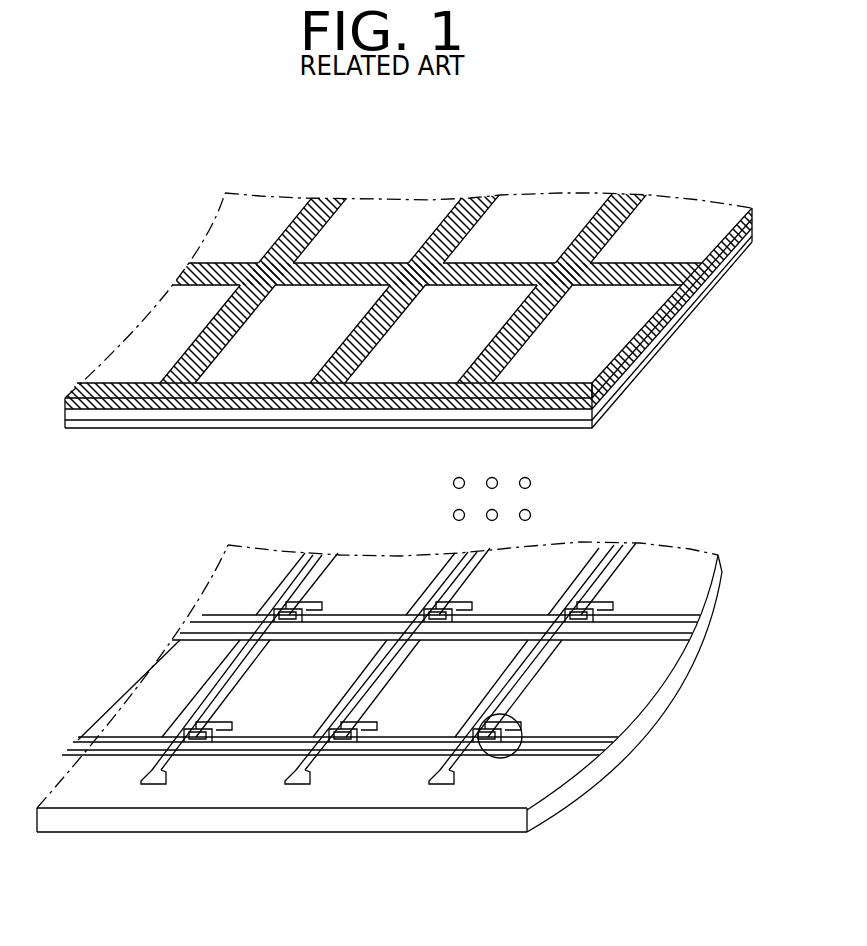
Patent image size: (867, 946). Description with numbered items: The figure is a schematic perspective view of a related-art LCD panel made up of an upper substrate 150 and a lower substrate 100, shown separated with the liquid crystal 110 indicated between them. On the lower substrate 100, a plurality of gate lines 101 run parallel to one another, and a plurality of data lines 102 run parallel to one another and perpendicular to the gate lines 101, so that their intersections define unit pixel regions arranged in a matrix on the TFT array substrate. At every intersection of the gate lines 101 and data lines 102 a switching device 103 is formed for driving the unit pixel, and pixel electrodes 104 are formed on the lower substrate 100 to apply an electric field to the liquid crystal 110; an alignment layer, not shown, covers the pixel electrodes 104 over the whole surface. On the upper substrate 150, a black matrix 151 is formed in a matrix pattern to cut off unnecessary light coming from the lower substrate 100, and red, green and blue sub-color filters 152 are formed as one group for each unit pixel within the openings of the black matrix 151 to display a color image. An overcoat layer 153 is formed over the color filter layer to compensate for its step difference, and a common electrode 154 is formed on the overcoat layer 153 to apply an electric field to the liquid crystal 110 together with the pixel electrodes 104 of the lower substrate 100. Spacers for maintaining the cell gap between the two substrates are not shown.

The lower substrate 100 is at (122, 672).
The gate lines 101 is at (562, 748).
The data lines 102 is at (520, 690).
The switching device 103 is at (497, 760).
The pixel electrodes 104 is at (605, 687).
The liquid crystal 110 is at (452, 484).
The upper substrate 150 is at (146, 284).
The black matrix 151 is at (612, 398).
The sub-color filters 152 is at (645, 326).
The overcoat layer 153 is at (563, 413).
The common electrode 154 is at (543, 427).